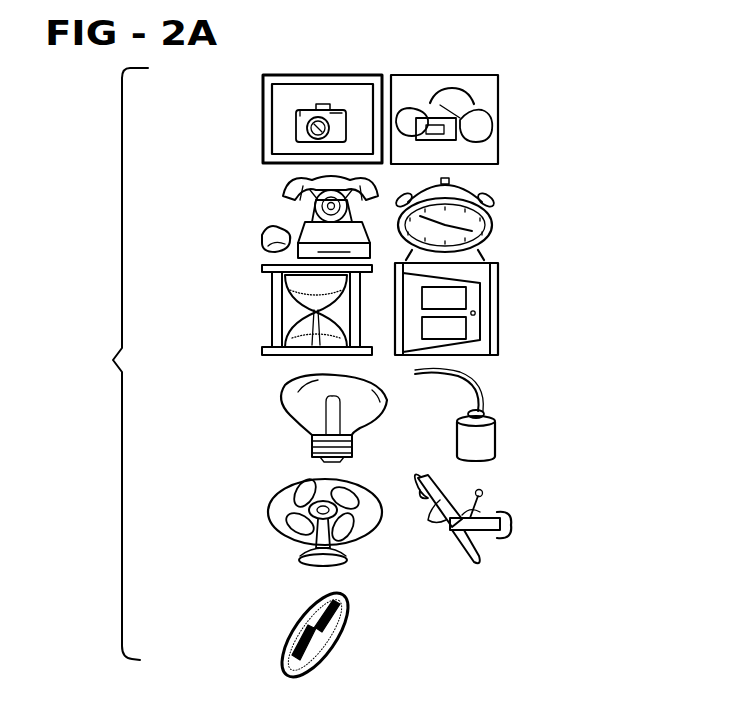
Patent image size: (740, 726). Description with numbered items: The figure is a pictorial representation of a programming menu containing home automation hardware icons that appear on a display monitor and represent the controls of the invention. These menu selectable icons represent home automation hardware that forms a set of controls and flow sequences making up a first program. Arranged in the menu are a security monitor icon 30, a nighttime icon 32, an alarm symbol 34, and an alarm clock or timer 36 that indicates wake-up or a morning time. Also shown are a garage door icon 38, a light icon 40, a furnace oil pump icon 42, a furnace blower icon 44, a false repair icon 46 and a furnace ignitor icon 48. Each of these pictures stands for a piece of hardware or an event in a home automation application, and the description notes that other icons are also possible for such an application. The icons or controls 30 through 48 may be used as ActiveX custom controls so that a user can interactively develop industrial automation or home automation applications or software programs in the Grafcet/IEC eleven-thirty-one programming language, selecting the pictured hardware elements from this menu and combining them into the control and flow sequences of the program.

The security monitor icon 30 is at (262, 110).
The nighttime icon 32 is at (500, 112).
The alarm symbol 34 is at (265, 196).
The alarm clock or timer 36 is at (497, 218).
The garage door icon 38 is at (498, 310).
The light icon 40 is at (283, 402).
The furnace oil pump icon 42 is at (497, 443).
The furnace blower icon 44 is at (268, 510).
The false repair icon 46 is at (510, 535).
The furnace ignitor icon 48 is at (300, 613).